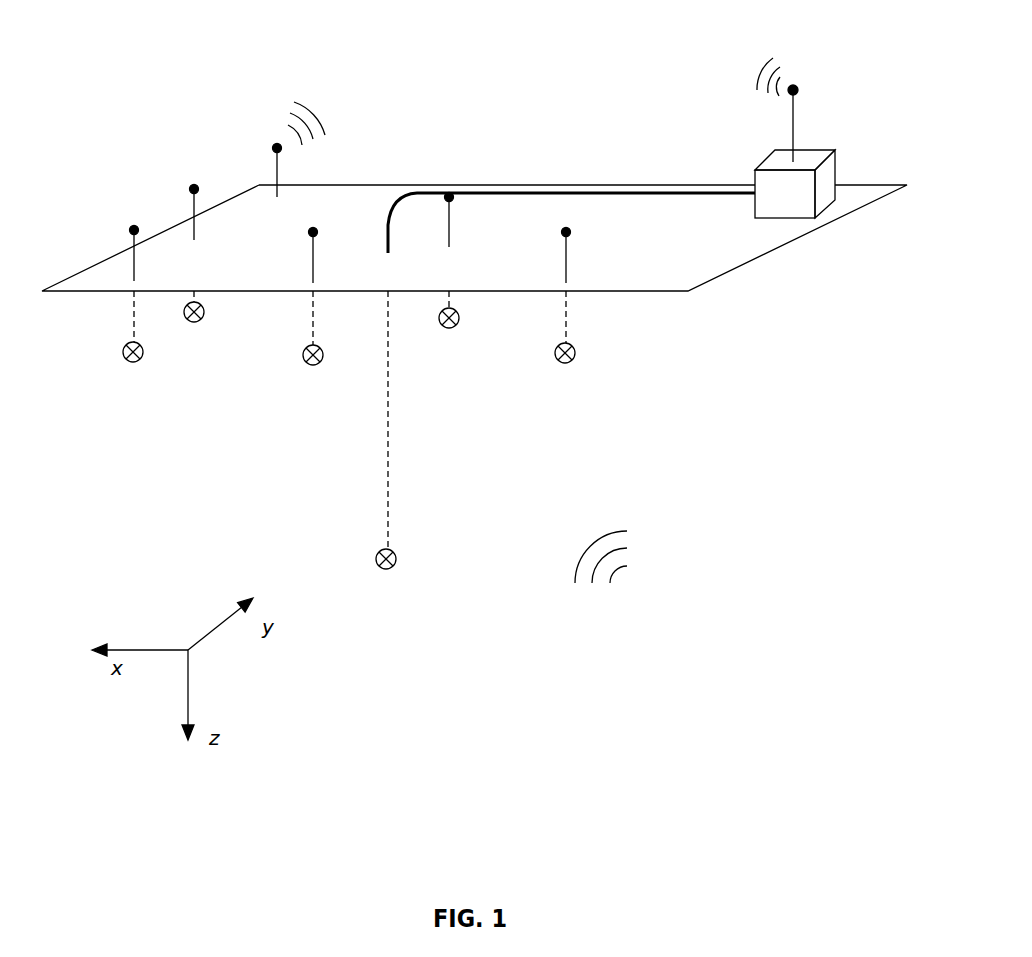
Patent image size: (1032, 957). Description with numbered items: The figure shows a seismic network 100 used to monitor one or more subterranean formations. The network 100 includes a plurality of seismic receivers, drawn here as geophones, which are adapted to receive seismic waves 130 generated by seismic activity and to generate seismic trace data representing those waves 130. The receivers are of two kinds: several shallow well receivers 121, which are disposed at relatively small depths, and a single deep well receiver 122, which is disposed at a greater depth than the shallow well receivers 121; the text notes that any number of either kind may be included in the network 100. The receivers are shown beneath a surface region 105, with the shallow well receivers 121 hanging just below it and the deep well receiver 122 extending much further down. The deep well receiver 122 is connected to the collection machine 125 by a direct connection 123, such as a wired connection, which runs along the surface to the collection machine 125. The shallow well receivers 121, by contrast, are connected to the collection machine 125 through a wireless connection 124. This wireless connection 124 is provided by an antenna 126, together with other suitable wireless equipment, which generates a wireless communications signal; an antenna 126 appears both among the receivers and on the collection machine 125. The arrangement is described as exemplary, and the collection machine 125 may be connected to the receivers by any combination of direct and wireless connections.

The network 100 is at (474, 331).
The ceiling 105 is at (177, 253).
The shallow well receiver 121 is at (202, 320).
The deep well receiver 122 is at (397, 559).
The direct connection 123 is at (493, 193).
The wireless connection 124 is at (323, 106).
The collection machine 125 is at (822, 182).
The antenna 126 is at (277, 163).
The seismic waves 130 is at (643, 548).